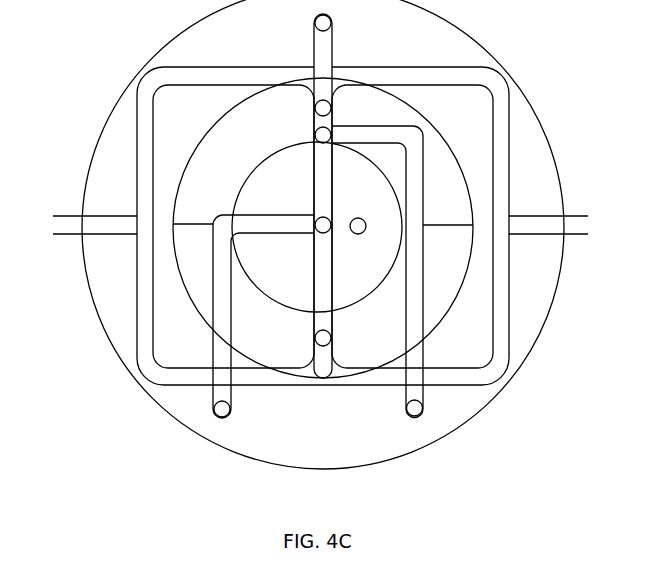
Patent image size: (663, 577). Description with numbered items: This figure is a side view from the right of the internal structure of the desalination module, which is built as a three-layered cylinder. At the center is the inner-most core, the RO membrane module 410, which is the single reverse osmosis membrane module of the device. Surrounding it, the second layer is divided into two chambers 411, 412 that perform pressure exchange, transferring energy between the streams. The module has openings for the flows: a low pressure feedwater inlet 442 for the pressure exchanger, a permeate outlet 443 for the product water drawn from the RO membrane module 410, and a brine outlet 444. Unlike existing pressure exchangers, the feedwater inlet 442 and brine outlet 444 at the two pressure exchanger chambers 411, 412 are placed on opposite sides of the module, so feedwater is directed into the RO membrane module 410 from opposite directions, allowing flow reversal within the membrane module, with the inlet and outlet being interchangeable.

The RO membrane module 410 is at (317, 227).
The pressure exchange chamber 411 is at (323, 228).
The pressure exchange chamber 412 is at (377, 272).
The low pressure feedwater inlet 442 is at (72, 227).
The permeate outlet 443 is at (360, 234).
The brine outlet 444 is at (569, 227).